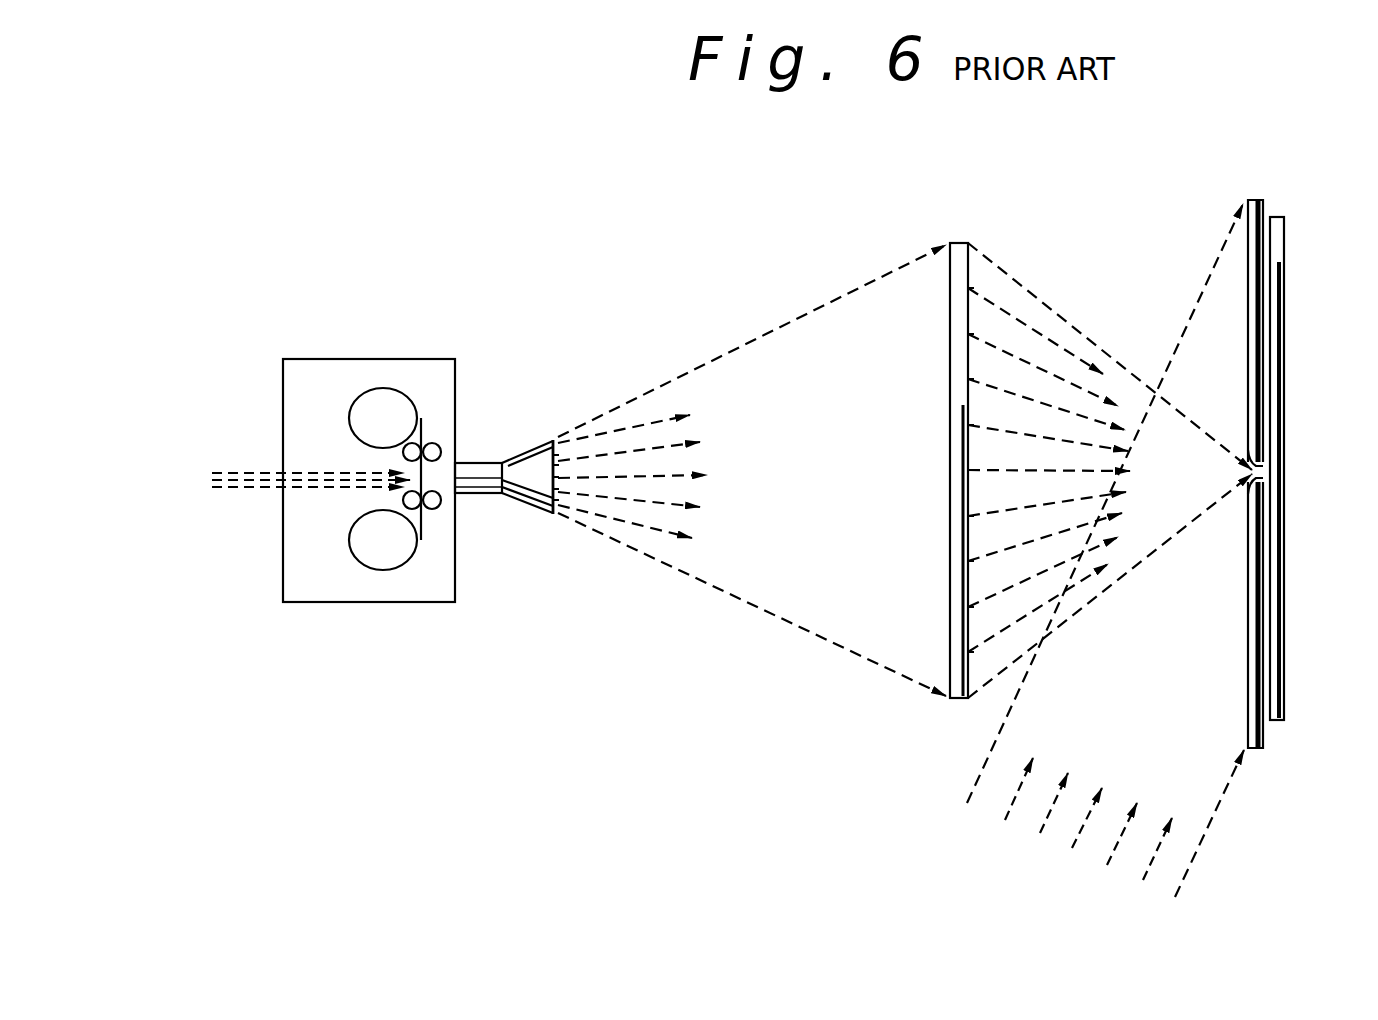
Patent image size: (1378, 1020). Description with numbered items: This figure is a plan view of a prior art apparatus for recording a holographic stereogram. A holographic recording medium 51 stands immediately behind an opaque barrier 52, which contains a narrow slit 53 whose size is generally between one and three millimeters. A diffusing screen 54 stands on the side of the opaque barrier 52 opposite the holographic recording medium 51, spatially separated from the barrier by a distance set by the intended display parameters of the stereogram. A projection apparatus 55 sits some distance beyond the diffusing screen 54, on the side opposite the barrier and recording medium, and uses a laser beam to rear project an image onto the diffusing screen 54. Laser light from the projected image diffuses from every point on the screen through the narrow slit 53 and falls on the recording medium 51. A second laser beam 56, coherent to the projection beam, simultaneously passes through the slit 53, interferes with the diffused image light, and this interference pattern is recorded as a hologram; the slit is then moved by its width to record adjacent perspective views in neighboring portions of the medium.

The holographic recording medium 51 is at (1278, 266).
The opaque barrier 52 is at (1263, 200).
The narrow slit 53 is at (1243, 497).
The diffusing screen 54 is at (963, 243).
The projection apparatus 55 is at (363, 359).
The second laser beam 56 is at (978, 838).